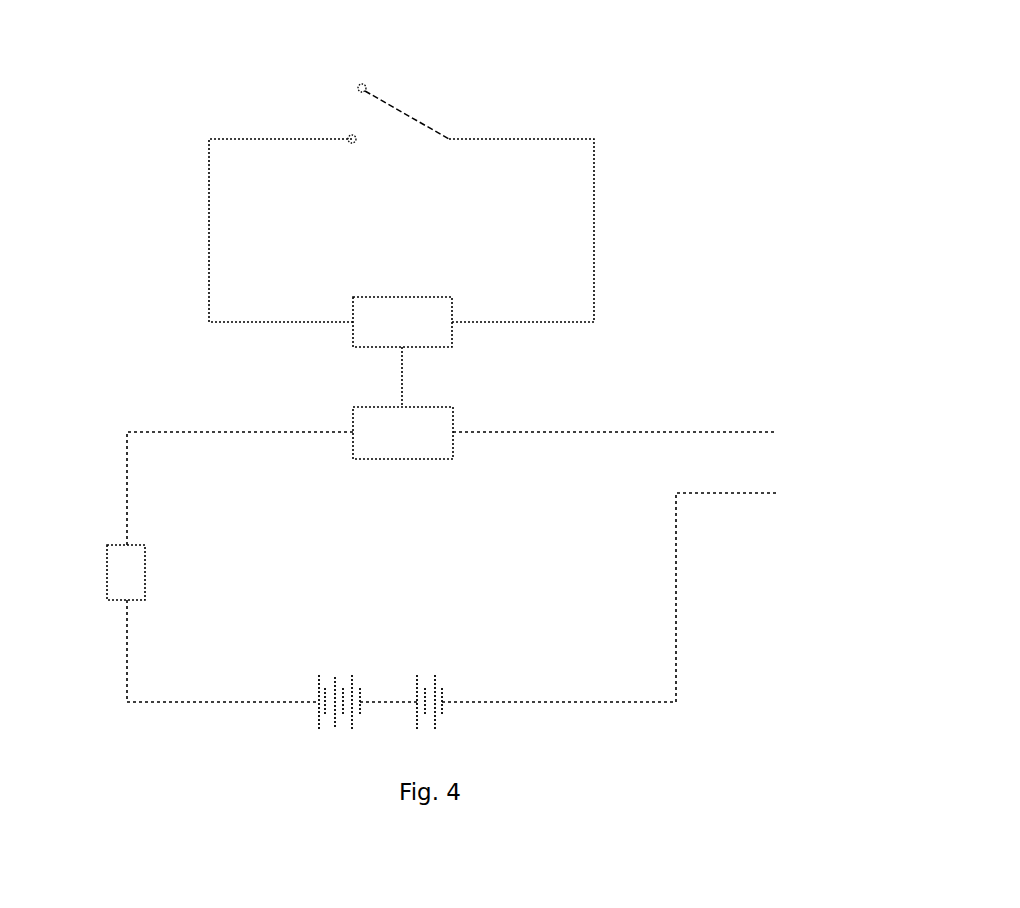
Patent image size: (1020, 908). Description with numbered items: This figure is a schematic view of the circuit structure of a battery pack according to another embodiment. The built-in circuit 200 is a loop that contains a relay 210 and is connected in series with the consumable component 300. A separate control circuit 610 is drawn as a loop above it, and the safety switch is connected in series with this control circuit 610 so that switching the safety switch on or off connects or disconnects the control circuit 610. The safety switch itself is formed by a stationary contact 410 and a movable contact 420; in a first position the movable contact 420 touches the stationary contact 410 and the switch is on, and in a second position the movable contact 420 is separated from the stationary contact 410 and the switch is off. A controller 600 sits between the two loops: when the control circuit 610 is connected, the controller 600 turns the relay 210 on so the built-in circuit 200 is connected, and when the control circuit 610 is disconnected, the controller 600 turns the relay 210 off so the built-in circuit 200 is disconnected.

The built-in circuit 200 is at (167, 432).
The relay 210 is at (453, 407).
The consumable component 300 is at (128, 576).
The stationary contact 410 is at (353, 144).
The movable contact 420 is at (359, 85).
The controller 600 is at (400, 297).
The control circuit 610 is at (209, 212).